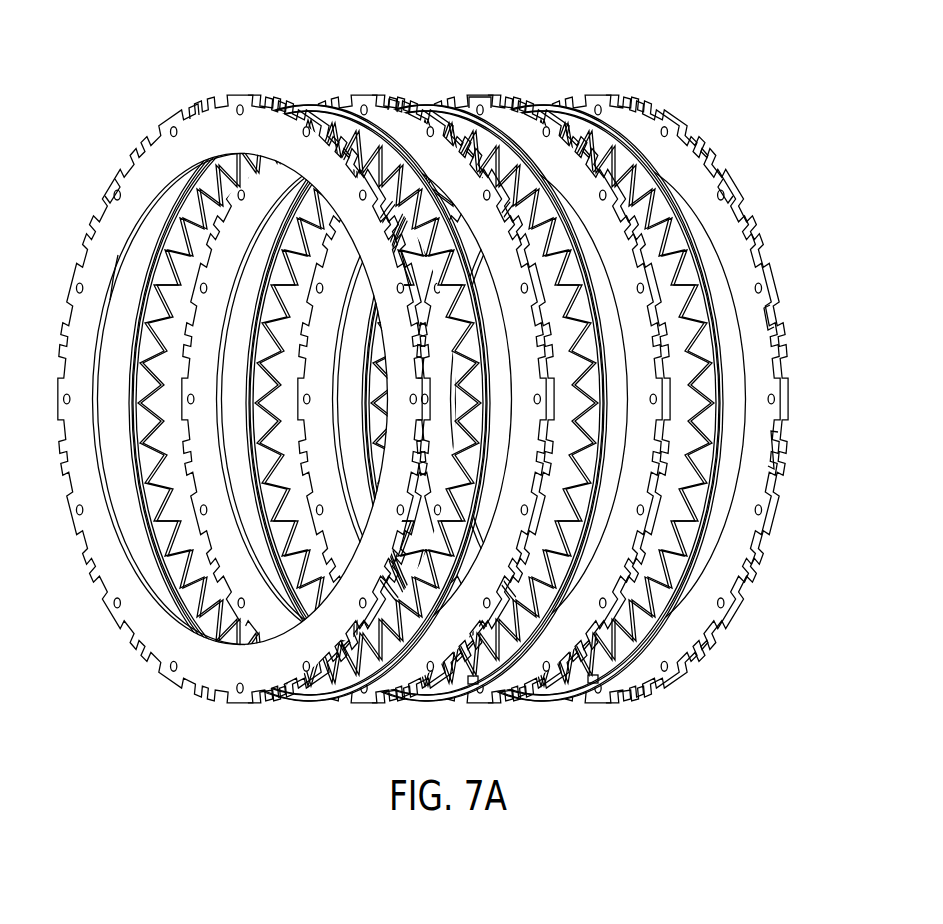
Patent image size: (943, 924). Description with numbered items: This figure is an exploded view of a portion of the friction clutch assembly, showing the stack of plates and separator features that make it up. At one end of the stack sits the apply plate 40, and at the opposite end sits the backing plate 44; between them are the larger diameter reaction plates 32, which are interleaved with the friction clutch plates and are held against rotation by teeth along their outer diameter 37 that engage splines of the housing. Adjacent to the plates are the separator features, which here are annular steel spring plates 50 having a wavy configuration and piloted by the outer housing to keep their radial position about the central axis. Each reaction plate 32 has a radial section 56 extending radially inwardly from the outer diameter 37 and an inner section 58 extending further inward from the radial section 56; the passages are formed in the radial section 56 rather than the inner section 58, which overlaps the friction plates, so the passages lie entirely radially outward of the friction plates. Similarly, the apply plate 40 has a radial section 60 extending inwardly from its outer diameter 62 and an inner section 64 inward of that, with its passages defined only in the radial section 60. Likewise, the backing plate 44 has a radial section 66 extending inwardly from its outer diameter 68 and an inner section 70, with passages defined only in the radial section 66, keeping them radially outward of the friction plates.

The reaction plate 32 is at (365, 92).
The outer diameter 37 is at (407, 92).
The apply plate 40 is at (242, 82).
The backing plate 44 is at (808, 356).
The spring plate 50 is at (125, 393).
The radial section 56 is at (386, 102).
The inner section 58 is at (466, 676).
The radial section 60 is at (197, 110).
The outer diameter 62 is at (117, 177).
The inner section 64 is at (110, 260).
The radial section 66 is at (730, 194).
The outer diameter 68 is at (787, 321).
The inner section 70 is at (754, 460).